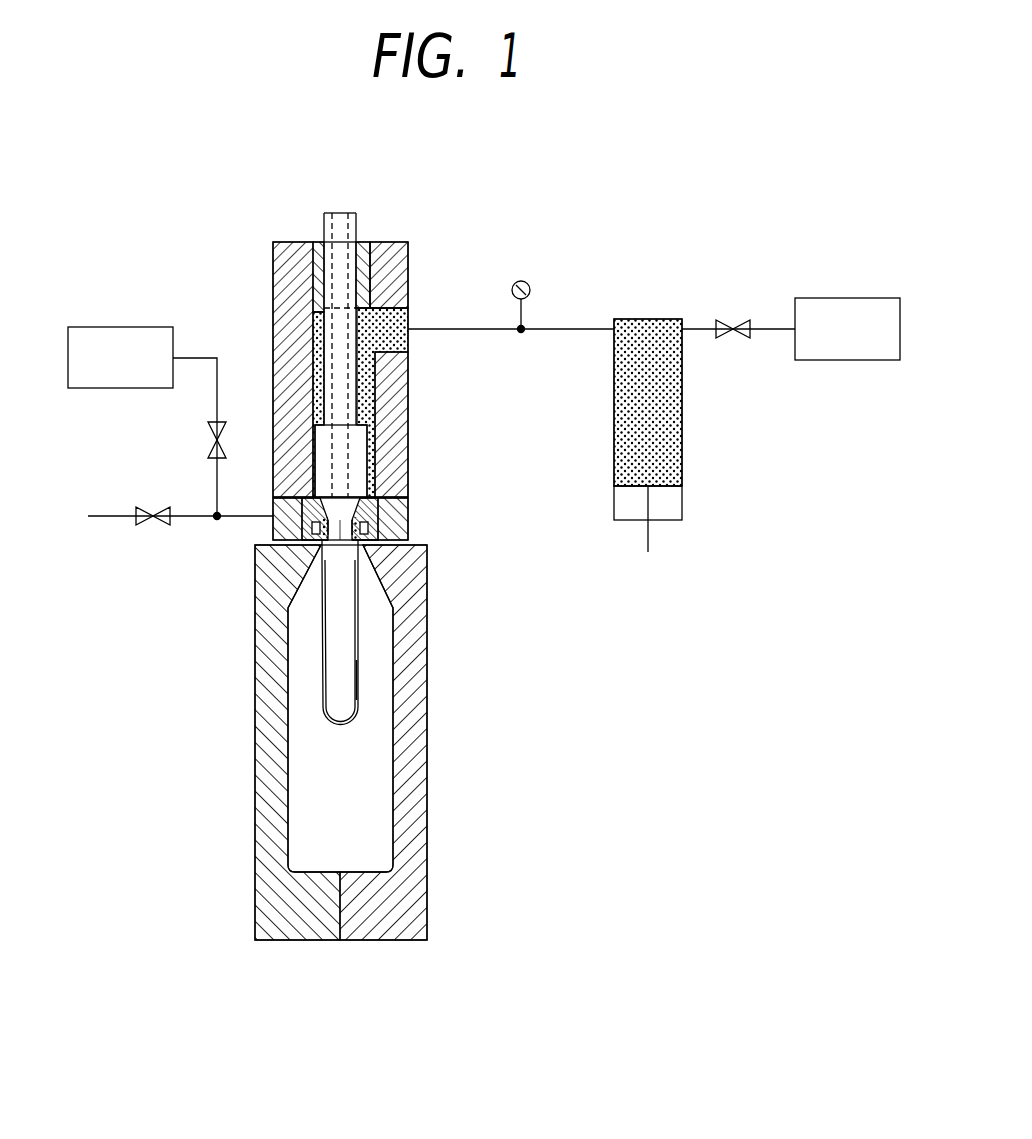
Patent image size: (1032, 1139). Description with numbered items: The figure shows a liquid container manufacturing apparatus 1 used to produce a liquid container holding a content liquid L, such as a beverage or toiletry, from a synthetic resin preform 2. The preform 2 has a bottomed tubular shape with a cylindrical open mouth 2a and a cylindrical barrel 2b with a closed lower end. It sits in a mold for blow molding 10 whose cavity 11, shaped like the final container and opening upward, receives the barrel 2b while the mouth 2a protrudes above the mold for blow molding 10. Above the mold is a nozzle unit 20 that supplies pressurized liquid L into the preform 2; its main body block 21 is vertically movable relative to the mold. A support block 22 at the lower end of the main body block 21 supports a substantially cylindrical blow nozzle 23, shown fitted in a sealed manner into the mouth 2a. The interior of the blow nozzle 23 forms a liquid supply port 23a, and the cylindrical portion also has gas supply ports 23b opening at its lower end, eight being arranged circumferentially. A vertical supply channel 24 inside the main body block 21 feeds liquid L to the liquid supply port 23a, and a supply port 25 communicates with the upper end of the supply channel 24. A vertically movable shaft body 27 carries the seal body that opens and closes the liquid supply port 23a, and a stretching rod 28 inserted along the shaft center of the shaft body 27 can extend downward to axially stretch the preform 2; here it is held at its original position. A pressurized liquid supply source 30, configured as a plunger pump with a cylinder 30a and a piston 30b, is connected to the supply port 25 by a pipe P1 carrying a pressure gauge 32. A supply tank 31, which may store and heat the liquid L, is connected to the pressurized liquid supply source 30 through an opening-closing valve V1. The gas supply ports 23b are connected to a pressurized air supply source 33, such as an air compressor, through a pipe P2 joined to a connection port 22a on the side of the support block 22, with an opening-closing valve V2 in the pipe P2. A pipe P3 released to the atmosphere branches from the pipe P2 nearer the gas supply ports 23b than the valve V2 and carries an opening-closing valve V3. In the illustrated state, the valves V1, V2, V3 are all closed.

The liquid container manufacturing apparatus 1 is at (478, 243).
The preform 2 is at (366, 641).
The mouth 2a is at (373, 540).
The barrel 2b is at (358, 681).
The mold for blow molding 10 is at (434, 760).
The cavity 11 is at (393, 773).
The nozzle unit 20 is at (395, 241).
The main body block 21 is at (290, 268).
The support block 22 is at (400, 512).
The connection port 22a is at (273, 518).
The blow nozzle 23 is at (373, 505).
The liquid supply port 23a is at (352, 520).
The gas supply port 23b is at (322, 548).
The supply channel 24 is at (318, 357).
The supply port 25 is at (398, 320).
The shaft body 27 is at (324, 230).
The stretching rod 28 is at (340, 530).
The pressurized liquid supply source 30 is at (698, 447).
The cylinder 30a is at (682, 502).
The piston 30b is at (632, 490).
The supply tank 31 is at (847, 329).
The pressure gauge 32 is at (528, 283).
The pressurized air supply source 33 is at (102, 333).
The liquid L is at (632, 425).
The pipe P1 is at (568, 329).
The pipe P2 is at (217, 478).
The pipe P3 is at (105, 516).
The opening-closing valve V1 is at (733, 320).
The opening-closing valve V2 is at (208, 430).
The opening-closing valve V3 is at (147, 505).